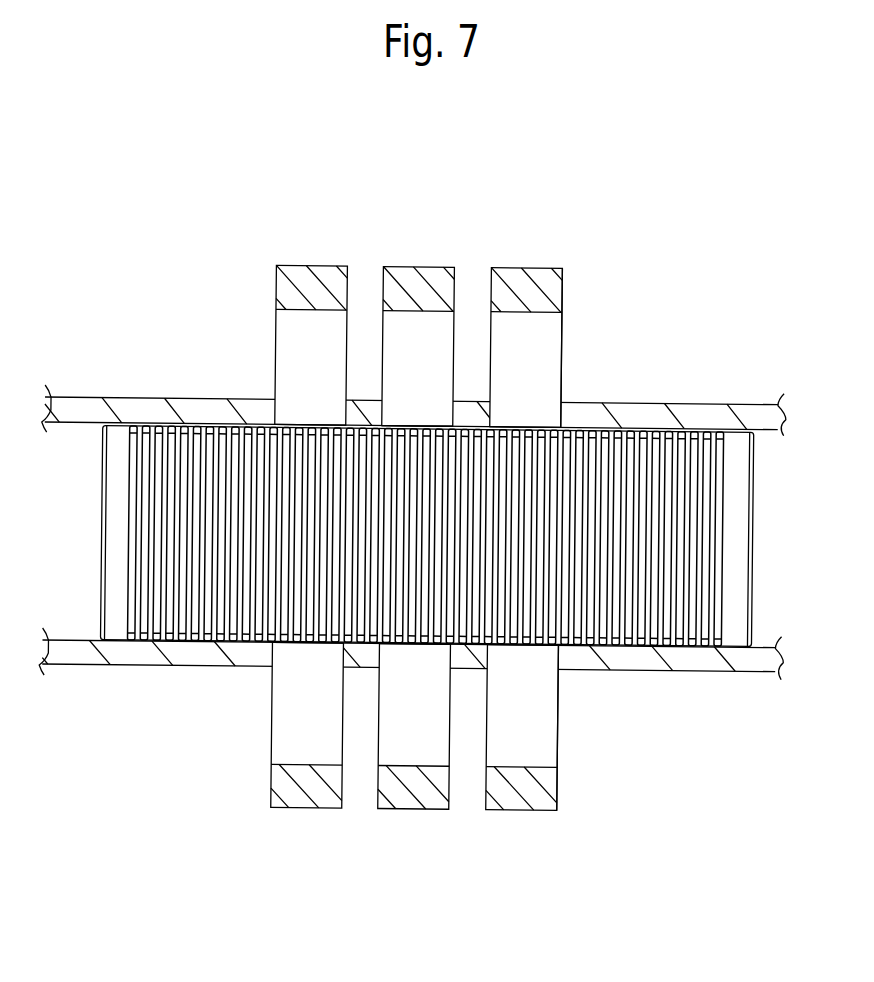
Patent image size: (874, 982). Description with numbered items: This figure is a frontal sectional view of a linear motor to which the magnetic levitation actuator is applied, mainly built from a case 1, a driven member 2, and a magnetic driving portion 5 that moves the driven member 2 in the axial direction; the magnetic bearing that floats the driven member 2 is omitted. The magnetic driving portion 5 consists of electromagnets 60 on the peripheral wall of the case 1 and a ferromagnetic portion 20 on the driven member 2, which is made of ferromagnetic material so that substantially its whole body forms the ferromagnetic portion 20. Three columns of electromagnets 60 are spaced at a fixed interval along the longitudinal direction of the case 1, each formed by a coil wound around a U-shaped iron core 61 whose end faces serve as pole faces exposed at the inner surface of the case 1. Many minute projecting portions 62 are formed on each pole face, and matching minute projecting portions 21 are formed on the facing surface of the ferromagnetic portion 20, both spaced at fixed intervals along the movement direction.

The case 1 is at (743, 392).
The driven member 2 is at (480, 542).
The magnetic driving portion 5 is at (447, 534).
The ferromagnetic portion 20 is at (198, 420).
The projecting portions 21 is at (173, 641).
The electromagnets 60 is at (305, 252).
The iron core 61 is at (560, 360).
The projecting portions 62 is at (303, 420).